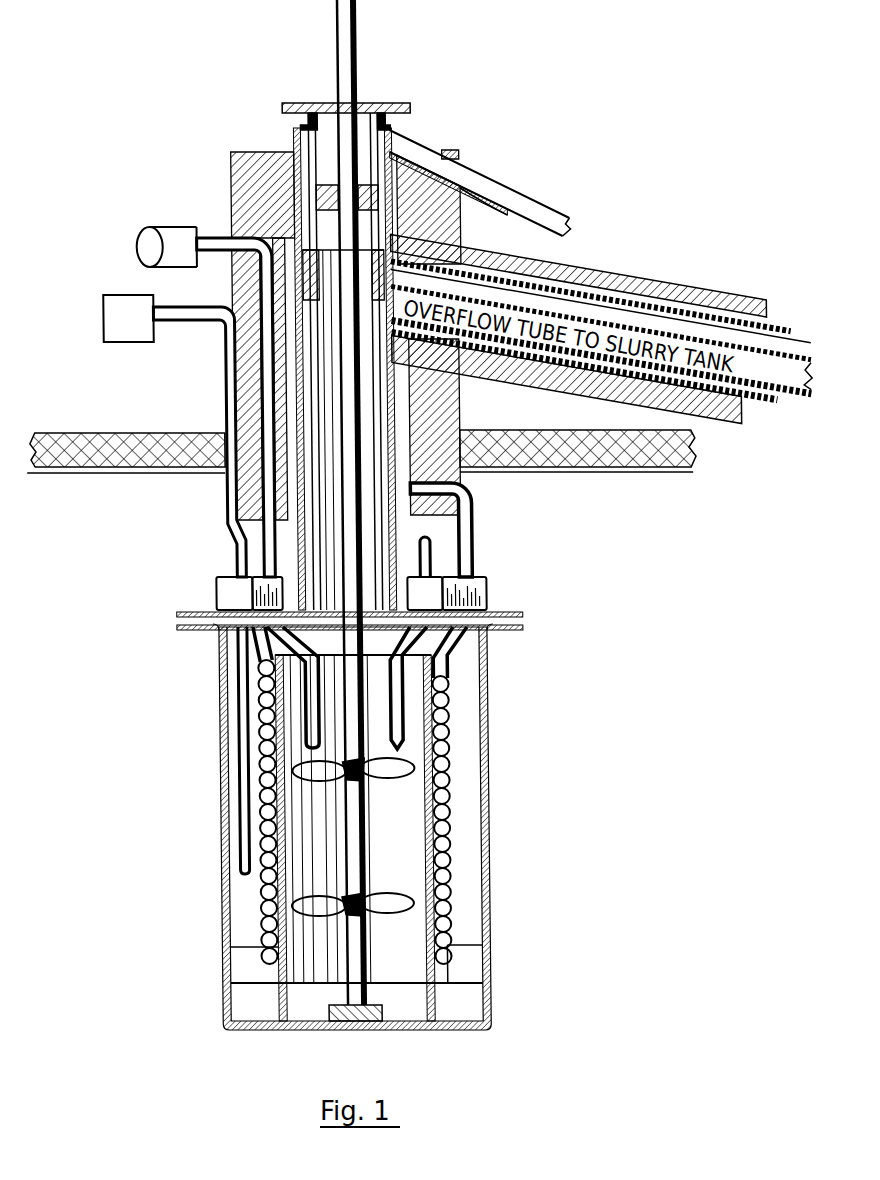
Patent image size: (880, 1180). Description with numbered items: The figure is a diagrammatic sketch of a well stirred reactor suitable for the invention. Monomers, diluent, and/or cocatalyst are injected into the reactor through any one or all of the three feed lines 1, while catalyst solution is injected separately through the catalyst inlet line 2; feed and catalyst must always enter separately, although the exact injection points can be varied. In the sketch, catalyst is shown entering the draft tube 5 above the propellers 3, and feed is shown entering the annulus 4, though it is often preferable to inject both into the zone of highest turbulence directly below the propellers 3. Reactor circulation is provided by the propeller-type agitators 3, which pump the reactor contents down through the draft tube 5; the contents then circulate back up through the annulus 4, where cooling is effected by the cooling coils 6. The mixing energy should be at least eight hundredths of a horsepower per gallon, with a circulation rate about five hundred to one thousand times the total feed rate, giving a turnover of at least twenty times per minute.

The feed lines 1 is at (242, 777).
The catalyst inlet line 2 is at (218, 648).
The propellers 3 is at (393, 777).
The annulus 4 is at (254, 921).
The draft tube 5 is at (355, 838).
The cooling coils 6 is at (462, 718).